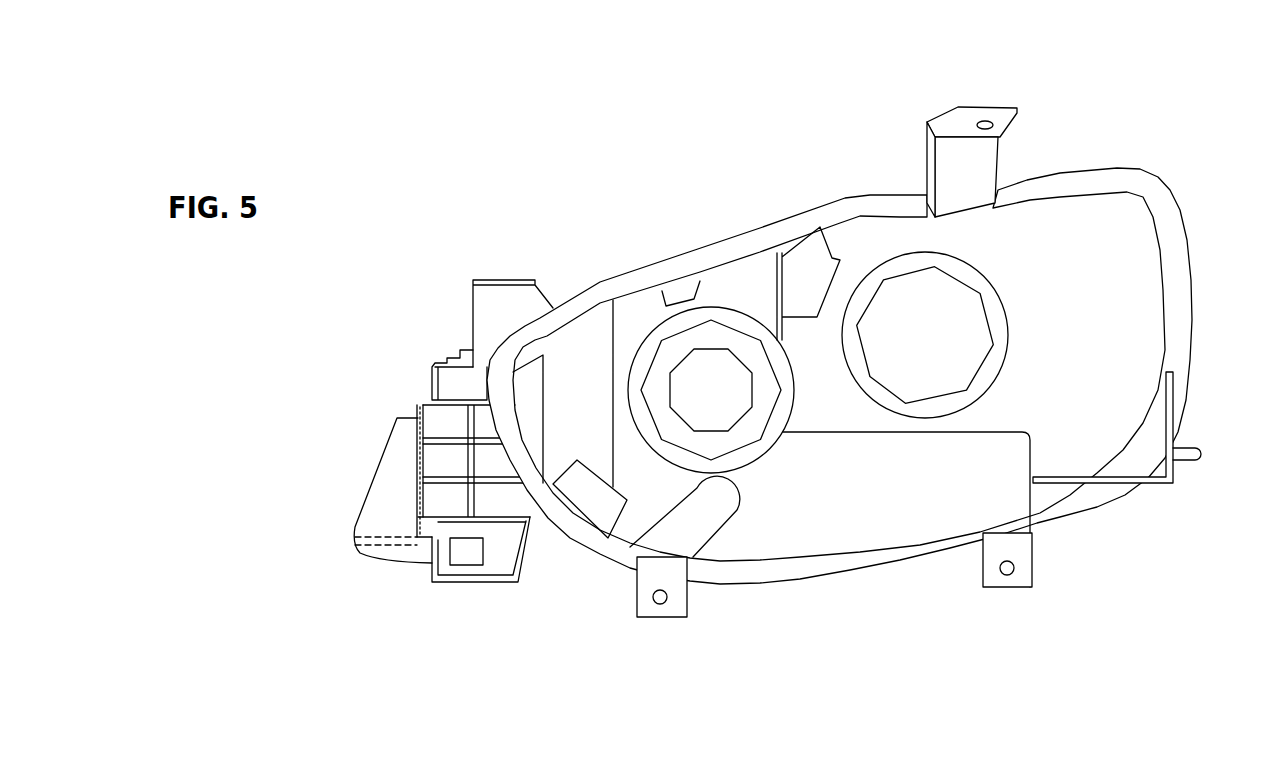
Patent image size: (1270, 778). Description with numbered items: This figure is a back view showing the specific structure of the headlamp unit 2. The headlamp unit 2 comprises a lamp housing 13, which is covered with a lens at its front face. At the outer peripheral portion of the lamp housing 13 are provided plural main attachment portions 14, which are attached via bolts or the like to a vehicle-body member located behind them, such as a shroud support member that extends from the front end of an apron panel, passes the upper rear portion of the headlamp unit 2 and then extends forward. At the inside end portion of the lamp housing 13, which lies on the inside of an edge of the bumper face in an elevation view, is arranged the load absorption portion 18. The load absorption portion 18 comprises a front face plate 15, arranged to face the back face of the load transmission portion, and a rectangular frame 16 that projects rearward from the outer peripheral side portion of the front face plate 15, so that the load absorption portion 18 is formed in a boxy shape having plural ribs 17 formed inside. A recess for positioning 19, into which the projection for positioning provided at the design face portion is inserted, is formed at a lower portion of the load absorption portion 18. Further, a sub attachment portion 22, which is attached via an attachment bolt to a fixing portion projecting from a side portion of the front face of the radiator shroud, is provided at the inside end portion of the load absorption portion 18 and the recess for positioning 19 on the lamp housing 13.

The headlamp unit 2 is at (770, 363).
The lamp housing 13 is at (1060, 197).
The main attachment portion 14 is at (985, 107).
The front face plate 15 is at (453, 383).
The rectangular frame 16 is at (418, 430).
The rib 17 is at (440, 452).
The load absorption portion 18 is at (421, 496).
The recess for positioning 19 is at (467, 556).
The sub attachment portion 22 is at (386, 546).